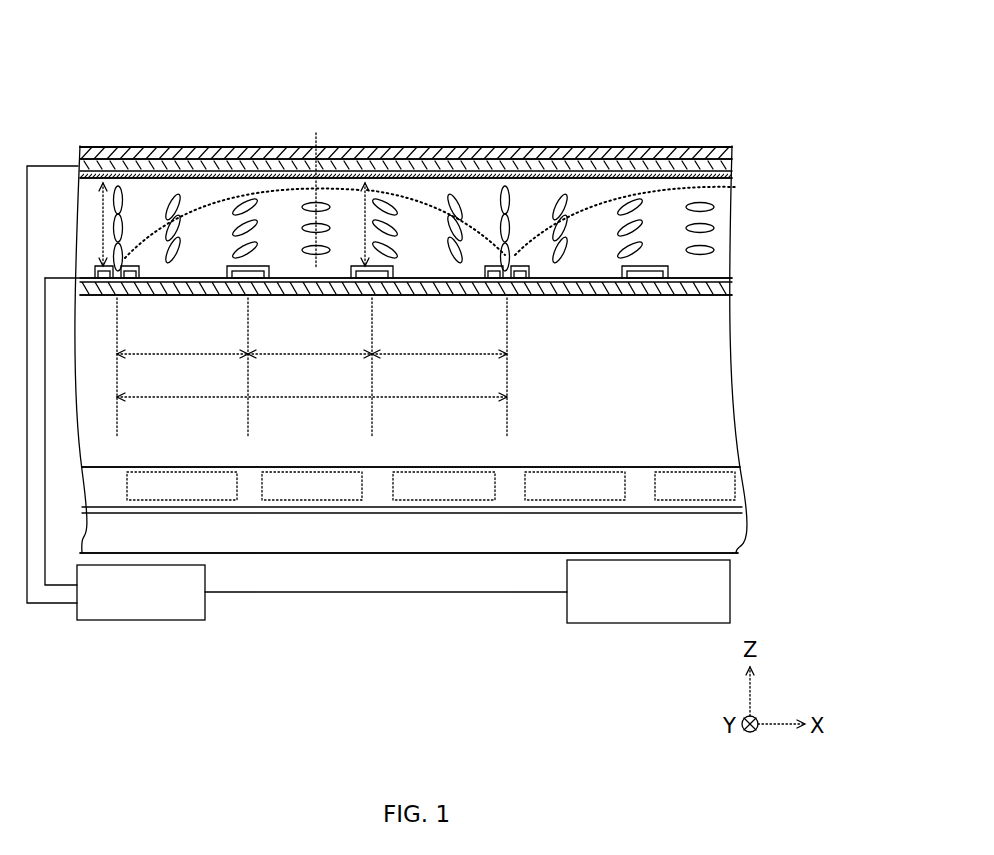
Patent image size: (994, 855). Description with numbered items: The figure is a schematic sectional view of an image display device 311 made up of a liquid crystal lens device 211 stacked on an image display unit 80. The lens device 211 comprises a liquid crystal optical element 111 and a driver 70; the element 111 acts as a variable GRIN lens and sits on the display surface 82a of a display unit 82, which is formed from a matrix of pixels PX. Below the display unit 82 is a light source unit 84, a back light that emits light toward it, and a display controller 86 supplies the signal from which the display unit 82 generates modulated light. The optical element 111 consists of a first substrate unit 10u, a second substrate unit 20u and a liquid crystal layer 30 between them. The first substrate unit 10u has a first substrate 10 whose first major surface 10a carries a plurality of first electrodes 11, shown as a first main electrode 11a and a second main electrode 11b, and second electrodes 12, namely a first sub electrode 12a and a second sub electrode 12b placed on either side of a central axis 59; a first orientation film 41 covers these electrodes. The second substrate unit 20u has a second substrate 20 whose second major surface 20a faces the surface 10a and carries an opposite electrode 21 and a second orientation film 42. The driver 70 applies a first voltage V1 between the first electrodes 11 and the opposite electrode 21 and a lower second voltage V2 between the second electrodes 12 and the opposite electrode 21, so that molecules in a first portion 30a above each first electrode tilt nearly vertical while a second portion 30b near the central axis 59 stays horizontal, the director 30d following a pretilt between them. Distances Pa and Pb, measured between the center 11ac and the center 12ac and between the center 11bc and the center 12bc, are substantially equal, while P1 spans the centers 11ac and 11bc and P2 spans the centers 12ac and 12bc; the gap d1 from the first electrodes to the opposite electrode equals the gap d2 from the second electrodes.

The liquid crystal lens device 211 is at (72, 123).
The image display device 311 is at (672, 77).
The liquid crystal optical element 111 is at (722, 123).
The second substrate 20 is at (728, 146).
The second major surface 20a is at (623, 163).
The opposite electrode 21 is at (728, 167).
The second orientation film 42 is at (730, 193).
The second substrate unit 20u is at (798, 135).
The liquid crystal layer 30 is at (727, 227).
The first portion 30a is at (128, 210).
The second portion 30b is at (340, 207).
The director 30d is at (557, 203).
The first voltage V1 is at (430, 229).
The second voltage V2 is at (385, 231).
The central axis 59 is at (318, 187).
The distance d1 is at (93, 223).
The distance d2 is at (360, 200).
The first electrodes 11 is at (341, 310).
The first main electrode 11a is at (120, 282).
The second main electrode 11b is at (520, 282).
The second electrodes 12 is at (645, 282).
The first sub electrode 12a is at (248, 282).
The second sub electrode 12b is at (375, 282).
The first substrate 10 is at (727, 302).
The first major surface 10a is at (727, 272).
The first orientation film 41 is at (735, 286).
The first substrate unit 10u is at (800, 283).
The center of first main electrode 11ac is at (116, 379).
The center of first sub electrode 12ac is at (250, 379).
The center of second sub electrode 12bc is at (374, 379).
The center of second main electrode 11bc is at (513, 379).
The distance Pa is at (182, 366).
The distance P2 is at (310, 366).
The distance Pb is at (439, 366).
The distance P1 is at (312, 410).
The display surface 82a is at (630, 467).
The pixels PX is at (210, 500).
The display unit 82 is at (512, 487).
The light source unit 84 is at (548, 537).
The display controller 86 is at (628, 597).
The image display unit 80 is at (640, 682).
The driver 70 is at (133, 605).